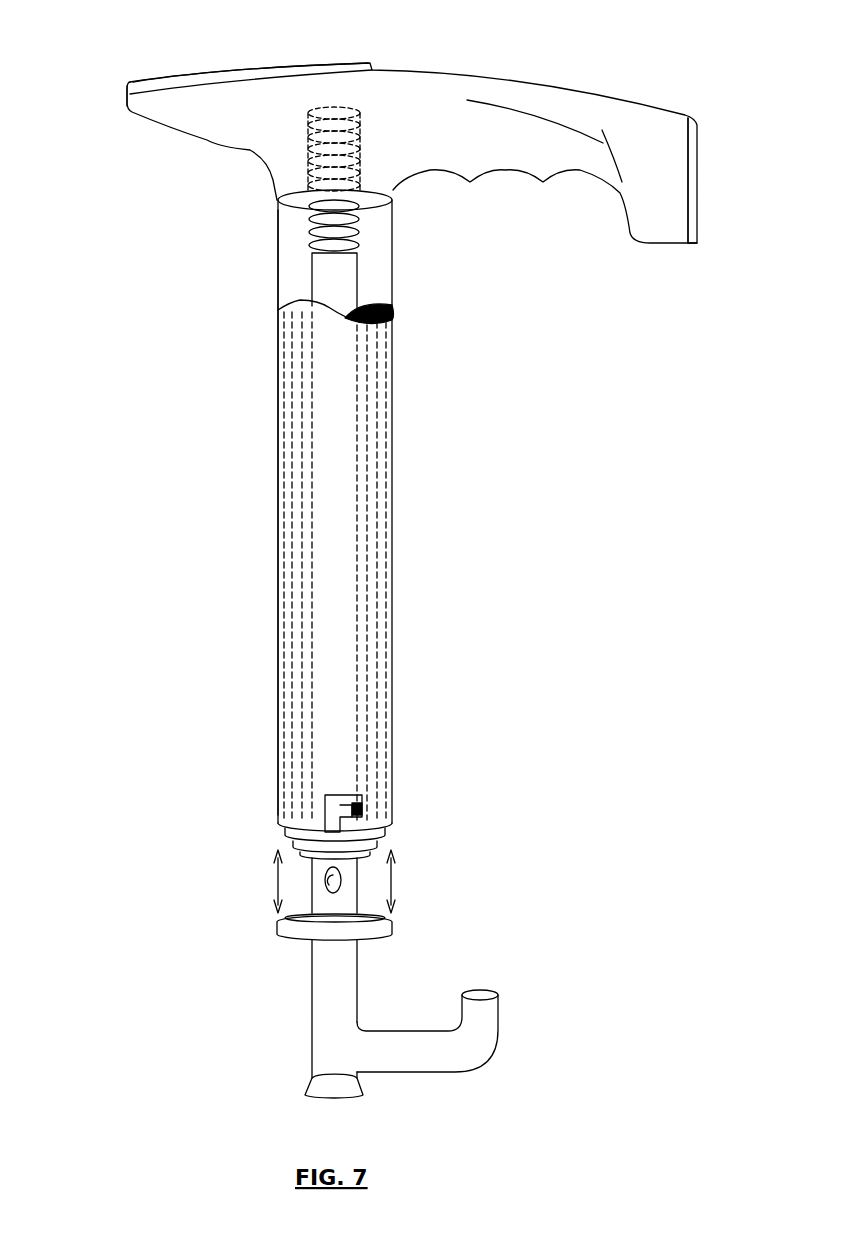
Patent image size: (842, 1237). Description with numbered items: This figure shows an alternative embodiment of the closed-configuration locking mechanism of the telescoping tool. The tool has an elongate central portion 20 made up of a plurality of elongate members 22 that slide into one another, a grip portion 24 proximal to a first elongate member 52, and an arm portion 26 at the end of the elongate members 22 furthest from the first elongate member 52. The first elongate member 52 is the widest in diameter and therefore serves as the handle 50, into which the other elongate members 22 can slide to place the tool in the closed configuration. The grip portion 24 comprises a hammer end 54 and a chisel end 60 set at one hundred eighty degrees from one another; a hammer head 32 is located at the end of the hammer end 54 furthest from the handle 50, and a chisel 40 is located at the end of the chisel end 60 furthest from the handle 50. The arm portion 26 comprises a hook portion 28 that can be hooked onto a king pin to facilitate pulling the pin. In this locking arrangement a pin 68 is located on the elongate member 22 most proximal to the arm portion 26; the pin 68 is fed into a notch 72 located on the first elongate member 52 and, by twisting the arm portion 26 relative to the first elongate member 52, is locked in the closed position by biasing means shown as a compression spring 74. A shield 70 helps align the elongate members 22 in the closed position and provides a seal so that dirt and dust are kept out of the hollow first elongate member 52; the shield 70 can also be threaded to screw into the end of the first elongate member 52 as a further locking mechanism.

The elongate central portion 20 is at (190, 763).
The elongate members 22 is at (277, 549).
The grip portion 24 is at (602, 52).
The arm portion 26 is at (521, 910).
The hook portion 28 is at (427, 1031).
The hammer head 32 is at (697, 155).
The chisel 40 is at (130, 98).
The handle 50 is at (392, 475).
The first elongate member 52 is at (390, 533).
The hammer end 54 is at (544, 139).
The chisel end 60 is at (250, 88).
The pin 68 is at (340, 880).
The shield 70 is at (392, 928).
The notch 72 is at (352, 808).
The compression spring 74 is at (357, 238).